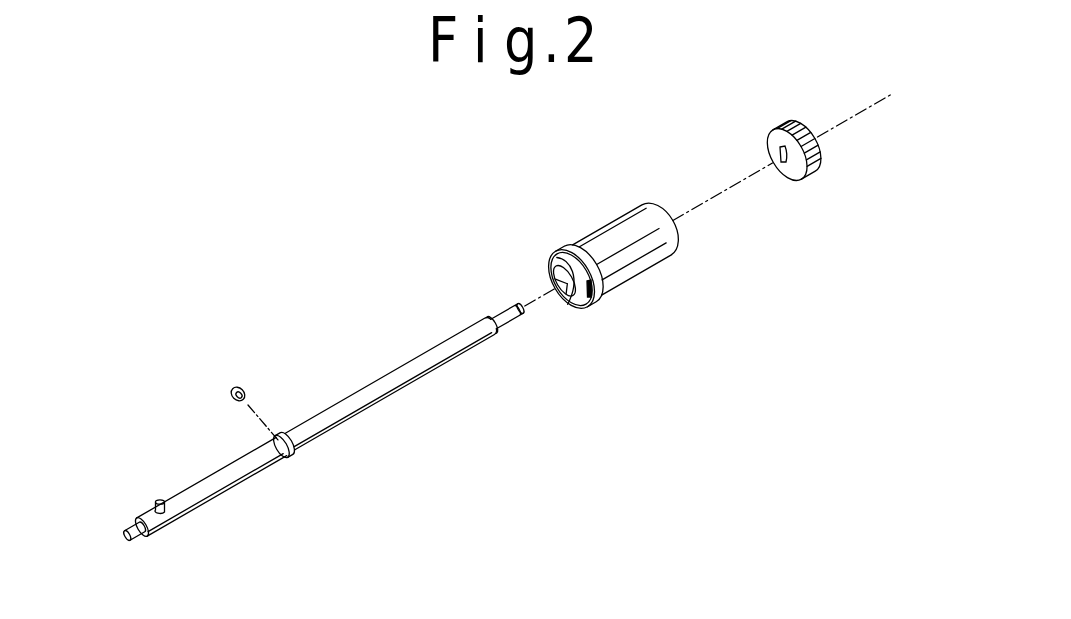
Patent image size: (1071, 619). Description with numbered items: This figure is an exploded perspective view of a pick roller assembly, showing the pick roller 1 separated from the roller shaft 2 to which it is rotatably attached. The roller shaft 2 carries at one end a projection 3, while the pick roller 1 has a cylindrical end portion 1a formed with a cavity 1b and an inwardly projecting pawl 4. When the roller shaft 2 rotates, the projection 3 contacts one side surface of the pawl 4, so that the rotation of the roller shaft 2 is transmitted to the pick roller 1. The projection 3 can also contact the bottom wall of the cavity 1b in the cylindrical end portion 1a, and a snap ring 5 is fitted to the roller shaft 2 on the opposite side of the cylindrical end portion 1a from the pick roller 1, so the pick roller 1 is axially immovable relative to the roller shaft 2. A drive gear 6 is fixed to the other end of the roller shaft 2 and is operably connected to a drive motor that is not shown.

The pick roller 1 is at (637, 256).
The cylindrical end portion 1a is at (588, 301).
The cavity 1b is at (559, 288).
The roller shaft 2 is at (368, 402).
The projection 3 is at (157, 500).
The pawl 4 is at (556, 260).
The snap ring 5 is at (236, 387).
The drive gear 6 is at (808, 178).